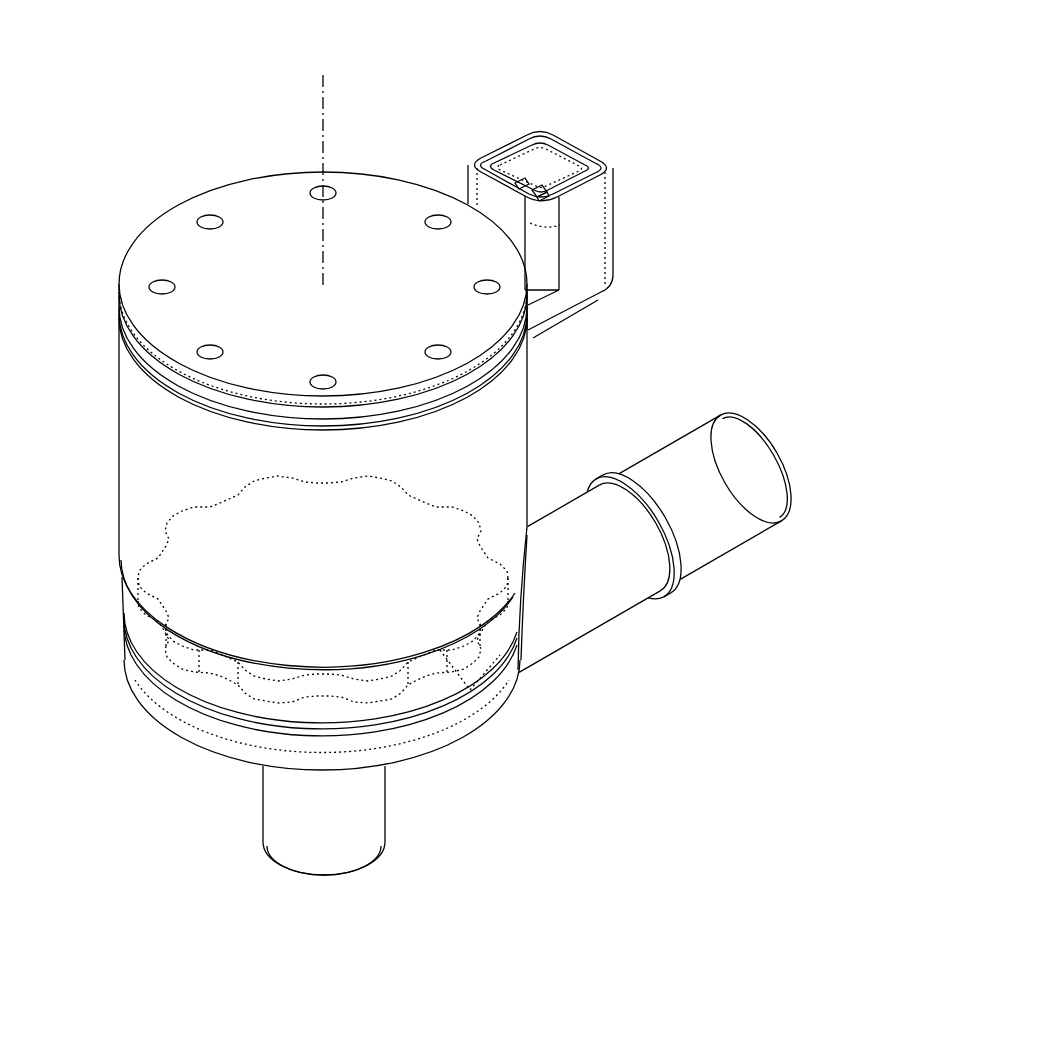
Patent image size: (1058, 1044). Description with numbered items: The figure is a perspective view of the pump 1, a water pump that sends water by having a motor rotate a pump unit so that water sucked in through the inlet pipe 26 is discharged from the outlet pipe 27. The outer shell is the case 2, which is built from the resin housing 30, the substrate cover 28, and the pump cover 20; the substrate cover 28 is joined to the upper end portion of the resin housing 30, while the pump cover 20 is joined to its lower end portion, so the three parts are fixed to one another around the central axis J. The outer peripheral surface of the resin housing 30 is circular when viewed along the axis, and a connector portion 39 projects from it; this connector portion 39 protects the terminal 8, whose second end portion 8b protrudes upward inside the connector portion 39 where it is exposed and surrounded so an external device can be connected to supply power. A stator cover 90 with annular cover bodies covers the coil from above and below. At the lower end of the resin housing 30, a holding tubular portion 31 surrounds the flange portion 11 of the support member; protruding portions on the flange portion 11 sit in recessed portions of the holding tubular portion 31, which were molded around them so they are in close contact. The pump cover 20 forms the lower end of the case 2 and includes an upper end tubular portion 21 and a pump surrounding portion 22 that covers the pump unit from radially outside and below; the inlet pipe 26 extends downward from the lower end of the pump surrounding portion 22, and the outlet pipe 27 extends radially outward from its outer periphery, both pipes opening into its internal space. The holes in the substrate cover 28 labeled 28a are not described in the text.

The pump 1 is at (661, 63).
The case 2 is at (625, 326).
The terminal 8 is at (537, 181).
The second end portion 8b is at (548, 190).
The flange portion 11 is at (516, 683).
The pump cover 20 is at (554, 516).
The upper end tubular portion 21 is at (163, 693).
The pump surrounding portion 22 is at (234, 752).
The inlet pipe 26 is at (350, 823).
The outlet pipe 27 is at (593, 588).
The substrate cover 28 is at (243, 205).
The hole 28a is at (288, 205).
The resin housing 30 is at (513, 442).
The holding tubular portion 31 is at (494, 716).
The connector portion 39 is at (590, 229).
The stator cover 90 is at (514, 366).
The central axis J is at (338, 115).